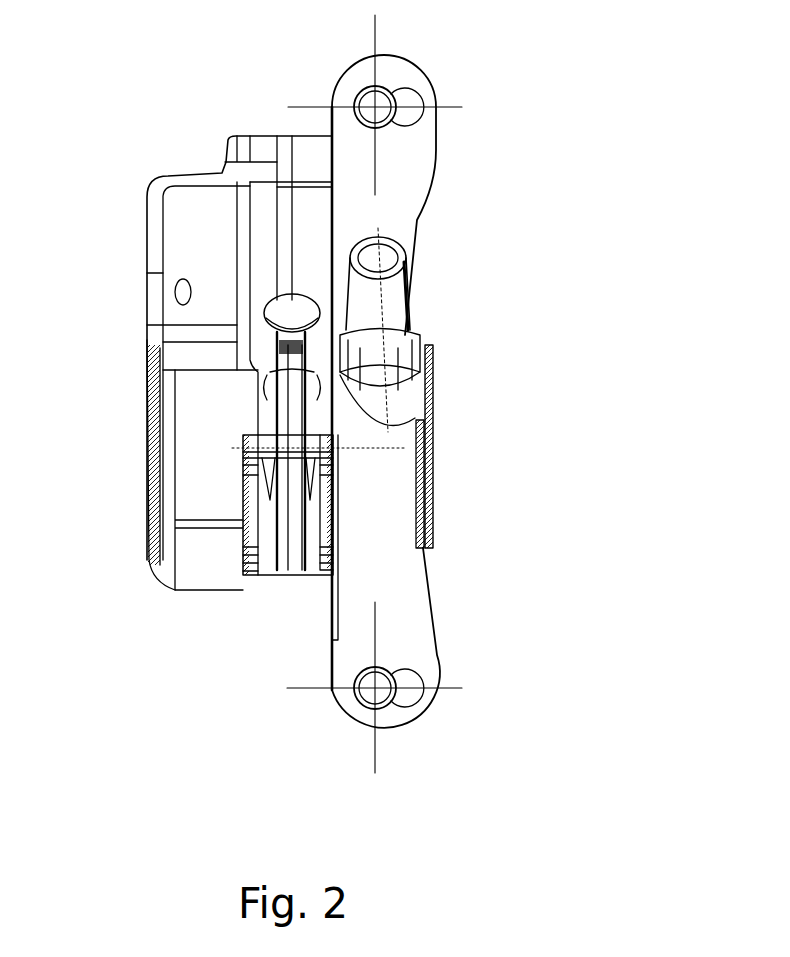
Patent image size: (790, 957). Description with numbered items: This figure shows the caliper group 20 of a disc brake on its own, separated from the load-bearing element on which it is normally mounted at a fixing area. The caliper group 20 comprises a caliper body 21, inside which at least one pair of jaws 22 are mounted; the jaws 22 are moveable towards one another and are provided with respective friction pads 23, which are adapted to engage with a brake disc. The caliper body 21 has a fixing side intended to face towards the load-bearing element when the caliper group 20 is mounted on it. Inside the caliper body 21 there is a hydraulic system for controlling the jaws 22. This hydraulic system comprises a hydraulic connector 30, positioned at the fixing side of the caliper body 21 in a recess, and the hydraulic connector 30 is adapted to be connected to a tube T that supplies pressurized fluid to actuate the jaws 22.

The caliper group 20 is at (503, 173).
The caliper body 21 is at (410, 118).
The tube T is at (393, 297).
The hydraulic connector 30 is at (393, 368).
The jaws 22 is at (243, 532).
The friction pads 23 is at (277, 550).